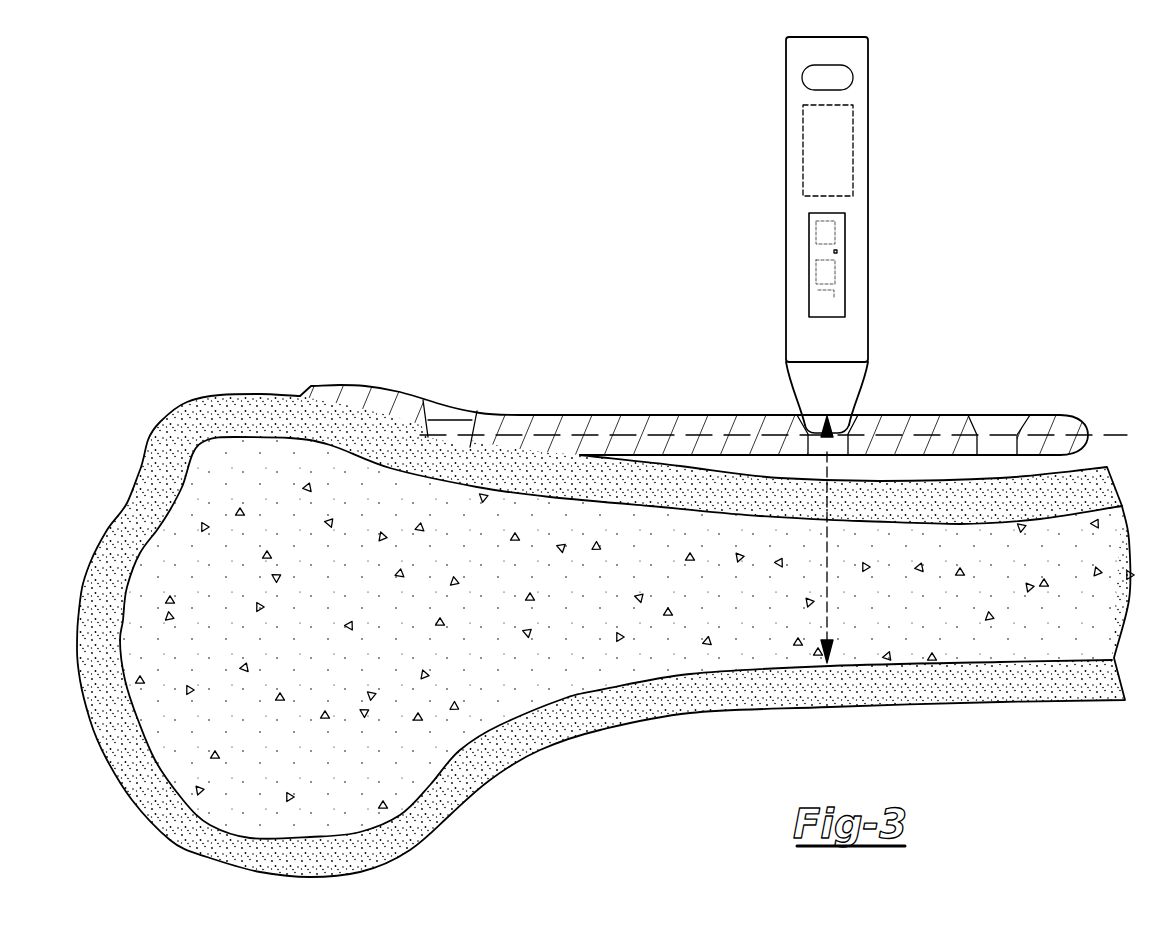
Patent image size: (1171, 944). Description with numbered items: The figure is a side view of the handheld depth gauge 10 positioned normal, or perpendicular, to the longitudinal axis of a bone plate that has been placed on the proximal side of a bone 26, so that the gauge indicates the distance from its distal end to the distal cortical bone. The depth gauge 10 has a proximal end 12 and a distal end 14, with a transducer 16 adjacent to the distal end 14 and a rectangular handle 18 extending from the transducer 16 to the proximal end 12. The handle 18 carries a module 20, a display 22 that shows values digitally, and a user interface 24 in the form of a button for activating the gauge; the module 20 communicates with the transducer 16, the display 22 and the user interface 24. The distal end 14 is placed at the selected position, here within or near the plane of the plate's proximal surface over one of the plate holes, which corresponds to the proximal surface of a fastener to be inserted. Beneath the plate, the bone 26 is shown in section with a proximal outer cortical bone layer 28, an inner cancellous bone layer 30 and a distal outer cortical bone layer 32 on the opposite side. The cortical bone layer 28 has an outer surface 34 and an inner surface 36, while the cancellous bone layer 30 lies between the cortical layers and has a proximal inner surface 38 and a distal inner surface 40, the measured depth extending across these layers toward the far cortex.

The depth gauge 10 is at (825, 229).
The proximal end 12 is at (848, 37).
The distal end 14 is at (805, 430).
The transducer 16 is at (850, 396).
The handle 18 is at (868, 176).
The module 20 is at (803, 160).
The display 22 is at (845, 270).
The user interface 24 is at (857, 78).
The bone 26 is at (605, 609).
The proximal outer cortical bone layer 28 is at (963, 484).
The inner cancellous bone layer 30 is at (949, 619).
The distal outer cortical bone layer 32 is at (928, 707).
The outer surface 34 is at (696, 442).
The inner surface 36 is at (1058, 414).
The proximal inner surface 38 is at (1040, 456).
The distal inner surface 40 is at (470, 412).